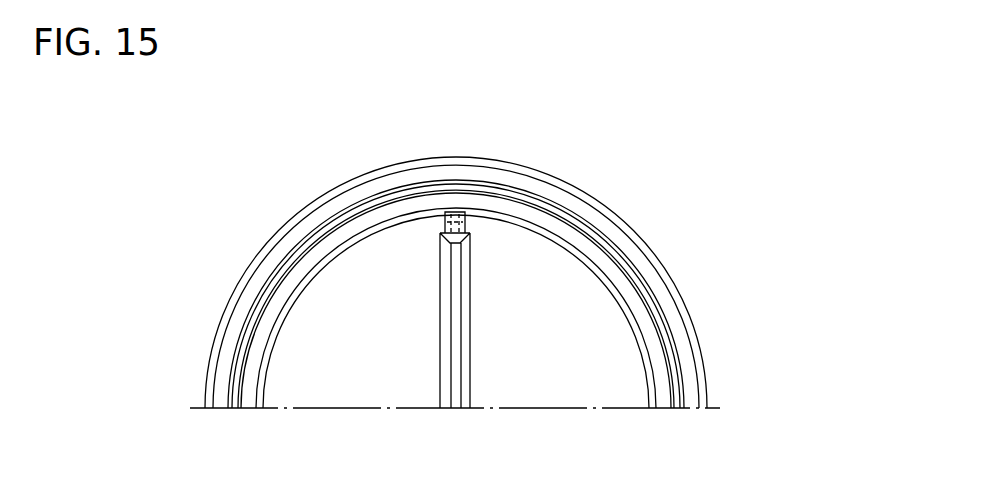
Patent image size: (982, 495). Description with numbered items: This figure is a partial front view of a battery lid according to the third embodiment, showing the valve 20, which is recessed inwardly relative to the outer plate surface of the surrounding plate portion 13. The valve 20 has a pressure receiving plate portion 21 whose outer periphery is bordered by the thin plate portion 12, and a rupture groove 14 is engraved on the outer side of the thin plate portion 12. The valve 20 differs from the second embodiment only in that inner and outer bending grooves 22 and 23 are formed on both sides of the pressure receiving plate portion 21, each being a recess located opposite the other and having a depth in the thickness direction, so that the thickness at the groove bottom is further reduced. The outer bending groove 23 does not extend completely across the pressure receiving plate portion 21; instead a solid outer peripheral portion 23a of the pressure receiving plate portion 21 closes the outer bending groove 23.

The thin plate portion 12 is at (688, 398).
The surrounding plate portion 13 is at (689, 286).
The rupture groove 14 is at (677, 402).
The valve 20 is at (633, 230).
The pressure receiving plate portion 21 is at (350, 385).
The inner bending groove 22 is at (483, 213).
The outer bending groove 23 is at (463, 372).
The solid outer peripheral portion 23a is at (447, 213).